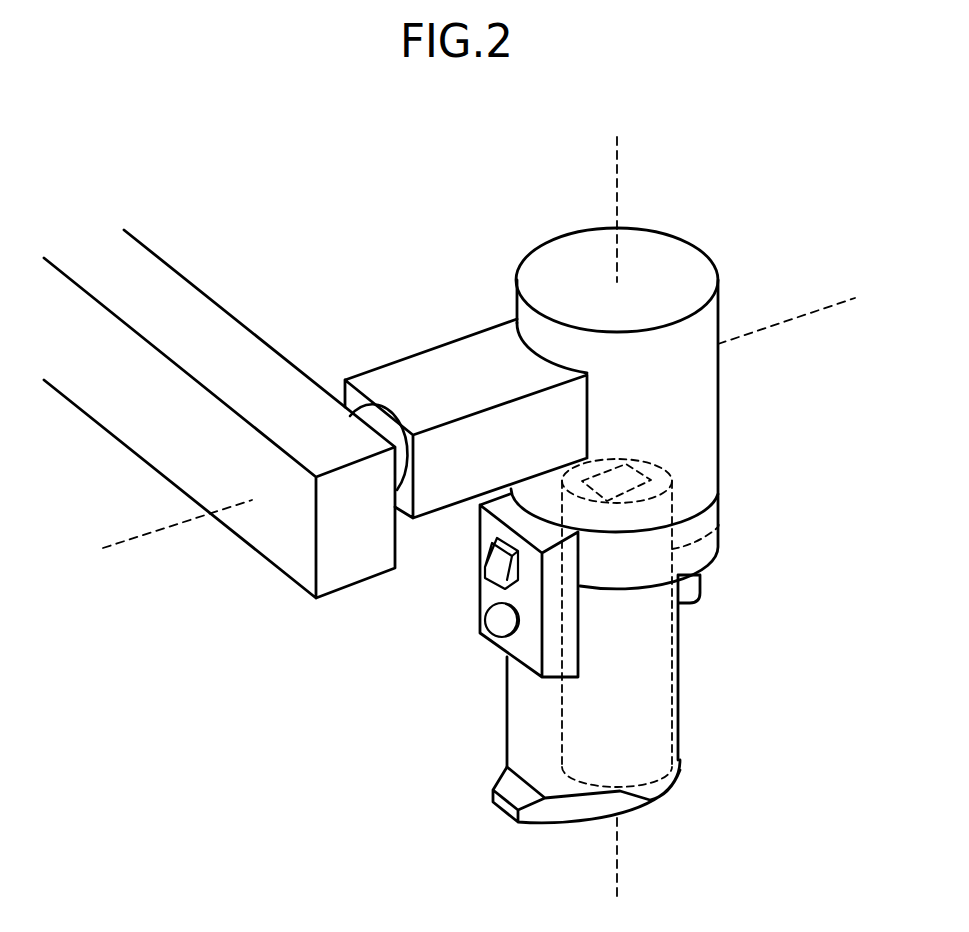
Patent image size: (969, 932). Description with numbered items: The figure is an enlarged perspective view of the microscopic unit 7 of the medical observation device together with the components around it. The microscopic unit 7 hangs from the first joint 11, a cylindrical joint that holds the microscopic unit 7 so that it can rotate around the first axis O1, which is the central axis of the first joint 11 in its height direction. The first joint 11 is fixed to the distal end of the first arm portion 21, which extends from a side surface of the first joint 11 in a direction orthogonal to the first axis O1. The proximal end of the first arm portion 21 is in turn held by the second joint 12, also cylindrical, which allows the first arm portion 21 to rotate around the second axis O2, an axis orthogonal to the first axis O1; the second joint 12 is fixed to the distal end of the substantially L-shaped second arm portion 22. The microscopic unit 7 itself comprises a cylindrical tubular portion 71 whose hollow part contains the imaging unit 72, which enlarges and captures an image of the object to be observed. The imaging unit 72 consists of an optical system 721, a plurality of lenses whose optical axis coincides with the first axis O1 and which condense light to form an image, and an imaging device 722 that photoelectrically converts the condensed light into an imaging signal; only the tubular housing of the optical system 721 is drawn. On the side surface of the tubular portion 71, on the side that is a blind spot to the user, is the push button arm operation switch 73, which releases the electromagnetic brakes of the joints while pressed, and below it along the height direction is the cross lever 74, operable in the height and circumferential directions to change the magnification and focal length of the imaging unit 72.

The first joint 11 is at (697, 379).
The second joint 12 is at (383, 428).
The first arm portion 21 is at (395, 375).
The second arm portion 22 is at (130, 431).
The microscopic unit 7 is at (630, 641).
The tubular portion 71 is at (678, 695).
The imaging unit 72 is at (704, 623).
The optical system 721 is at (672, 549).
The imaging device 722 is at (672, 473).
The arm operation switch 73 is at (492, 562).
The cross lever 74 is at (492, 621).
The first axis O1 is at (619, 152).
The second axis O2 is at (132, 541).